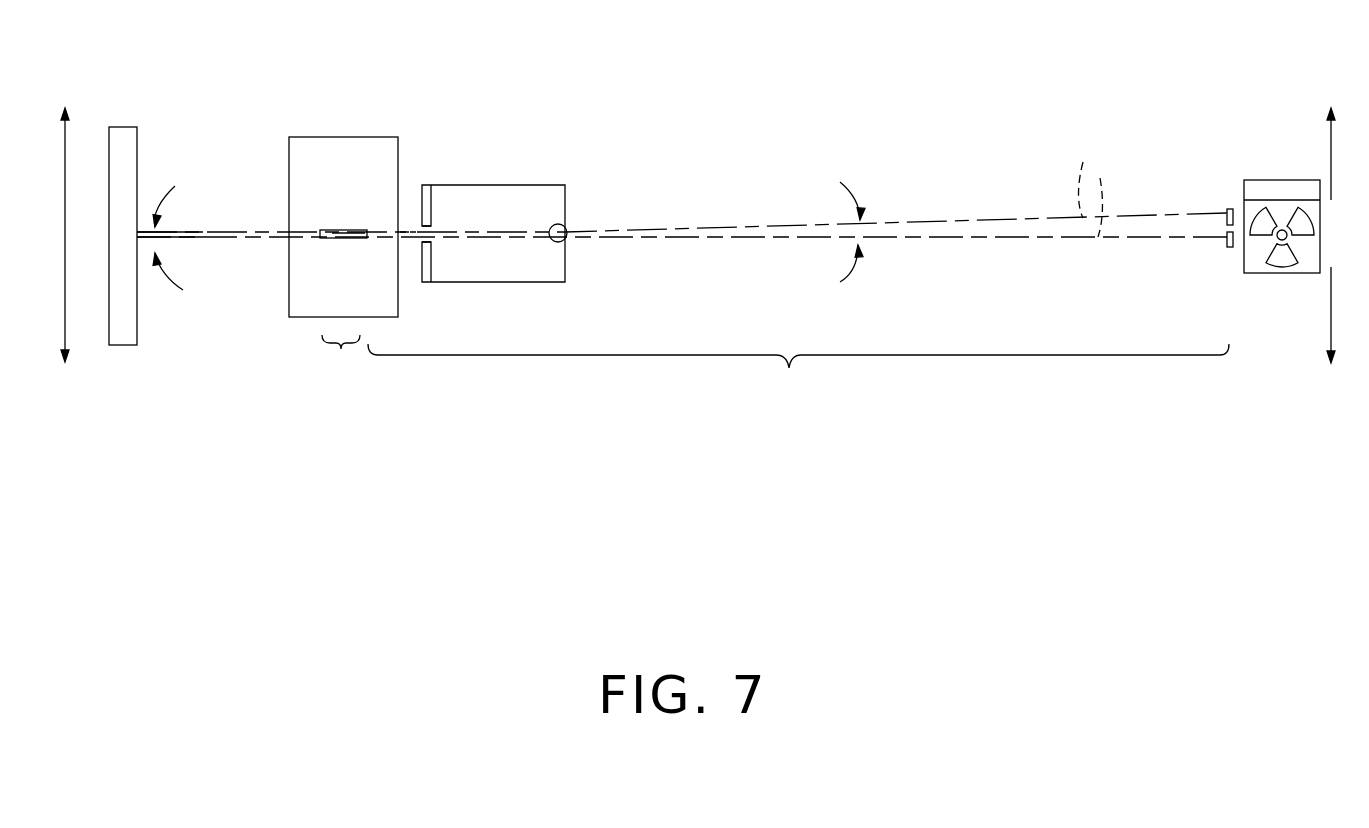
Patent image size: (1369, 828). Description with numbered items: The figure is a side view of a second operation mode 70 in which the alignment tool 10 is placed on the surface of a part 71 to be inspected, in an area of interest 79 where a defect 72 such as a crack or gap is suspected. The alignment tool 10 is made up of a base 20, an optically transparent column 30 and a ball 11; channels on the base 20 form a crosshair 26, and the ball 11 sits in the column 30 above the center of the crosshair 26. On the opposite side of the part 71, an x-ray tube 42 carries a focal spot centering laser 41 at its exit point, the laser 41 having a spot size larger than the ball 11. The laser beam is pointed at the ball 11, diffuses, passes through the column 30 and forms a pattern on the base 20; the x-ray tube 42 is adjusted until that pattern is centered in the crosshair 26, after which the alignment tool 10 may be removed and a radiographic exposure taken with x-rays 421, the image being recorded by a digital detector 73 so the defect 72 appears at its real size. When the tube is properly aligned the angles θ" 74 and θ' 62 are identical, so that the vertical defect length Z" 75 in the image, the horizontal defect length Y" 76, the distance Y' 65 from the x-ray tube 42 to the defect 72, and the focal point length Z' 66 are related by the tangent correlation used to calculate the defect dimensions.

The alignment tool 10 is at (475, 107).
The ball 11 is at (553, 225).
The base 20 is at (422, 275).
The crosshair 26 is at (420, 232).
The column 30 is at (493, 197).
The focal spot centering laser 41 is at (1303, 186).
The x-ray tube 42 is at (1308, 266).
The x-rays 421 is at (1100, 180).
The angle θ' 62 is at (858, 175).
The distance Y' 65 is at (789, 368).
The length Z' 66 is at (1328, 212).
The second operation mode 70 is at (613, 488).
The part to be inspected 71 is at (325, 142).
The defect 72 is at (332, 230).
The digital detector 73 is at (123, 345).
The angle θ" 74 is at (175, 186).
The length Z" 75 is at (85, 211).
The length Y" 76 is at (341, 349).
The area of interest 79 is at (405, 235).